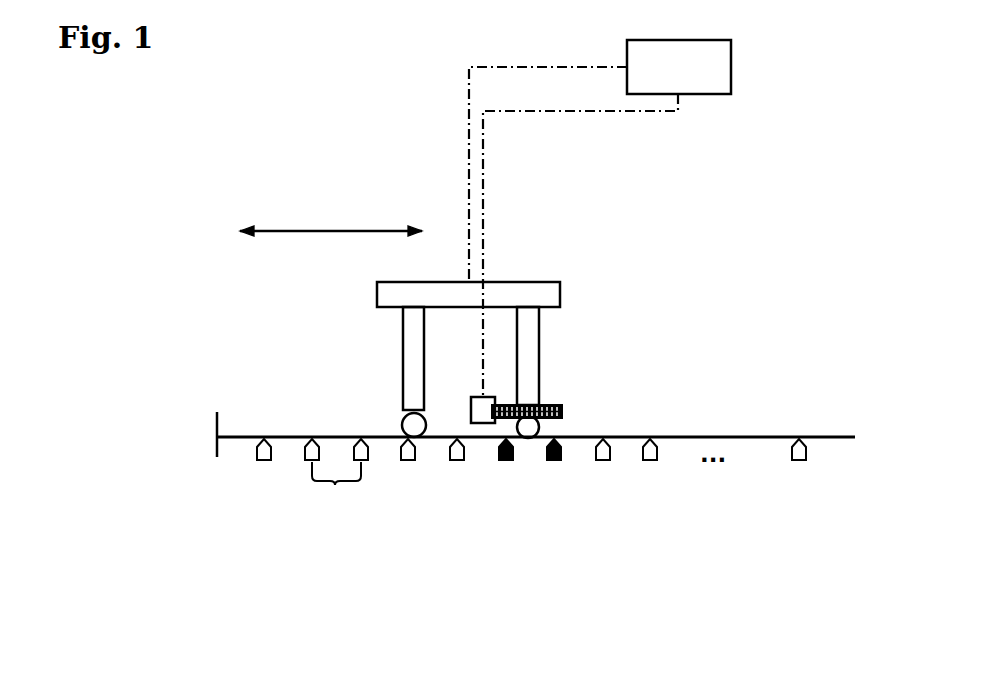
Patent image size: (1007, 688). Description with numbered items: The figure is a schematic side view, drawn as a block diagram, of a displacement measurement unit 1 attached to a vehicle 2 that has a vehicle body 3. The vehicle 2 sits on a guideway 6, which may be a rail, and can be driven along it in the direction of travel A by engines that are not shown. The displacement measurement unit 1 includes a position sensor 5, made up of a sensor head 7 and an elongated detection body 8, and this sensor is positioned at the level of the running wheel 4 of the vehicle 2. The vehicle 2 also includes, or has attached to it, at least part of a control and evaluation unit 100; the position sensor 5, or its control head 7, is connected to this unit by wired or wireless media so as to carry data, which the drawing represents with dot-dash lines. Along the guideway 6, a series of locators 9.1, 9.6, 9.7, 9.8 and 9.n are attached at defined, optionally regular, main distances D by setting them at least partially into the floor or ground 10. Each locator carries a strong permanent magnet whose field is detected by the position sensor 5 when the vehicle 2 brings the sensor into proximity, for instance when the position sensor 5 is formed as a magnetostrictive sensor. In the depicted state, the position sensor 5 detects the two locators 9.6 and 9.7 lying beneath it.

The displacement measurement unit 1 is at (649, 557).
The vehicle 2 is at (525, 279).
The vehicle body 3 is at (600, 323).
The running wheel 4 is at (371, 404).
The position sensor 5 is at (619, 365).
The guideway 6 is at (206, 389).
The sensor head 7 is at (403, 375).
The elongated detection body 8 is at (647, 337).
The locator 9.1 is at (269, 490).
The locator 9.6 is at (425, 489).
The locator 9.7 is at (509, 510).
The locator 9.8 is at (669, 412).
The locator 9.n is at (867, 414).
The floor or ground 10 is at (742, 526).
The control and evaluation unit 100 is at (704, 82).
The direction of travel A is at (331, 218).
The main distance D is at (271, 540).